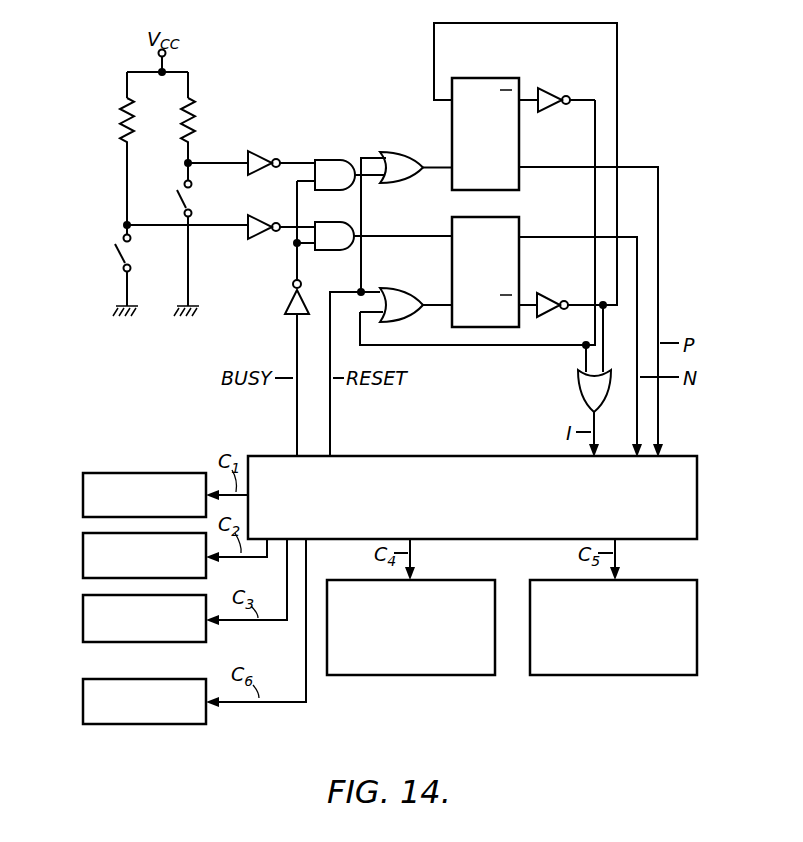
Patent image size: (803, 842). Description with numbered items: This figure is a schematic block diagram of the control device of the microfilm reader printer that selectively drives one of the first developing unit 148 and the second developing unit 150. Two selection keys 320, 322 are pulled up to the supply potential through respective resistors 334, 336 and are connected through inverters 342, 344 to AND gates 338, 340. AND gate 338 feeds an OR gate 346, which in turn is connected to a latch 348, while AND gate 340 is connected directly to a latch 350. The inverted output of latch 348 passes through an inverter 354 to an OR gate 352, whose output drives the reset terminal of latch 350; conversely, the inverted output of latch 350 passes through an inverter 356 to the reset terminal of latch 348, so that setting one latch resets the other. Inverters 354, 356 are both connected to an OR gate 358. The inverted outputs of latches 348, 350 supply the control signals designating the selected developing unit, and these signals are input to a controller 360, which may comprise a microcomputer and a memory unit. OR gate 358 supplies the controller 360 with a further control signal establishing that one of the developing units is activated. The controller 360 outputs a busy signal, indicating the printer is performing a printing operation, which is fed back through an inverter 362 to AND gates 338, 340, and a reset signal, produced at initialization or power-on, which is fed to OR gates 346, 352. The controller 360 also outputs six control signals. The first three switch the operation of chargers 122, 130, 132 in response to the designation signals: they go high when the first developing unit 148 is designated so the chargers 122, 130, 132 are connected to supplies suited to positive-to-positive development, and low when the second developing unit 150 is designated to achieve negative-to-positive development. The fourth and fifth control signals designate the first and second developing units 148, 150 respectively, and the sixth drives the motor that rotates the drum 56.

The resistor 336 is at (122, 117).
The resistor 334 is at (194, 118).
The selection key 320 is at (195, 200).
The selection key 322 is at (136, 254).
The inverter 342 is at (259, 154).
The inverter 344 is at (258, 236).
The AND gate 338 is at (333, 159).
The AND gate 340 is at (333, 240).
The OR gate 346 is at (395, 157).
The OR gate 352 is at (395, 299).
The latch 348 is at (513, 149).
The latch 350 is at (513, 268).
The inverter 354 is at (551, 92).
The inverter 356 is at (546, 312).
The OR gate 358 is at (578, 386).
The inverter 362 is at (285, 303).
The controller 360 is at (655, 543).
The charger 130 is at (82, 498).
The charger 132 is at (82, 560).
The charger 122 is at (82, 626).
The drum 56 is at (82, 708).
The first developing unit 148 is at (445, 677).
The second developing unit 150 is at (657, 677).